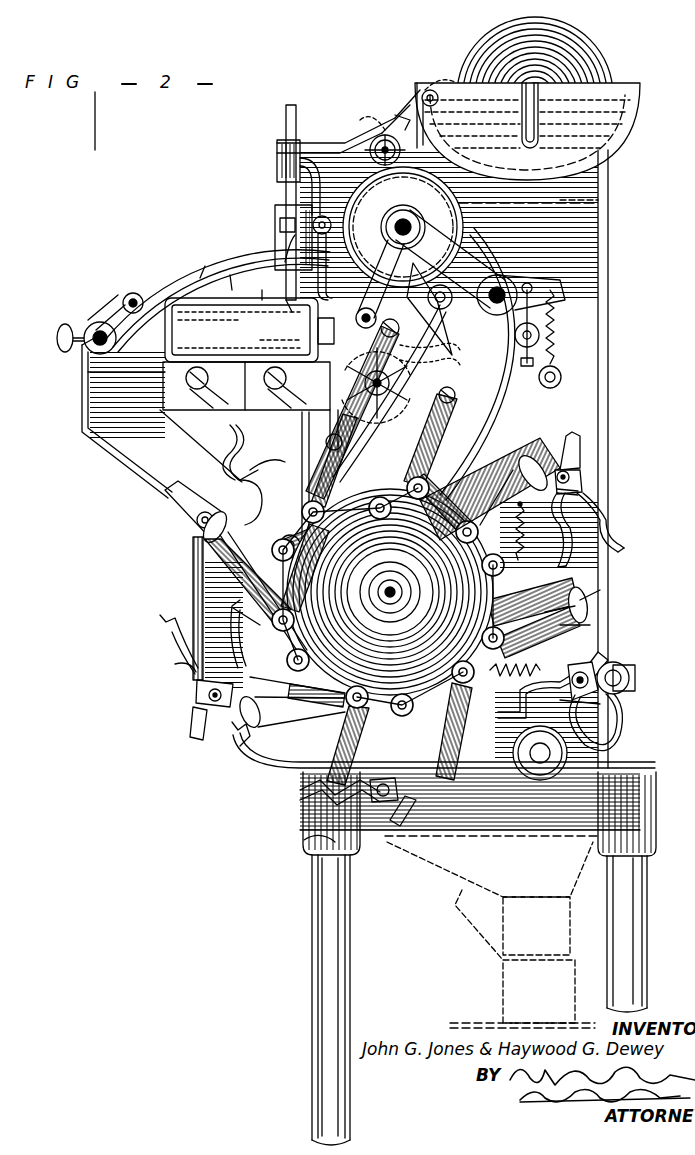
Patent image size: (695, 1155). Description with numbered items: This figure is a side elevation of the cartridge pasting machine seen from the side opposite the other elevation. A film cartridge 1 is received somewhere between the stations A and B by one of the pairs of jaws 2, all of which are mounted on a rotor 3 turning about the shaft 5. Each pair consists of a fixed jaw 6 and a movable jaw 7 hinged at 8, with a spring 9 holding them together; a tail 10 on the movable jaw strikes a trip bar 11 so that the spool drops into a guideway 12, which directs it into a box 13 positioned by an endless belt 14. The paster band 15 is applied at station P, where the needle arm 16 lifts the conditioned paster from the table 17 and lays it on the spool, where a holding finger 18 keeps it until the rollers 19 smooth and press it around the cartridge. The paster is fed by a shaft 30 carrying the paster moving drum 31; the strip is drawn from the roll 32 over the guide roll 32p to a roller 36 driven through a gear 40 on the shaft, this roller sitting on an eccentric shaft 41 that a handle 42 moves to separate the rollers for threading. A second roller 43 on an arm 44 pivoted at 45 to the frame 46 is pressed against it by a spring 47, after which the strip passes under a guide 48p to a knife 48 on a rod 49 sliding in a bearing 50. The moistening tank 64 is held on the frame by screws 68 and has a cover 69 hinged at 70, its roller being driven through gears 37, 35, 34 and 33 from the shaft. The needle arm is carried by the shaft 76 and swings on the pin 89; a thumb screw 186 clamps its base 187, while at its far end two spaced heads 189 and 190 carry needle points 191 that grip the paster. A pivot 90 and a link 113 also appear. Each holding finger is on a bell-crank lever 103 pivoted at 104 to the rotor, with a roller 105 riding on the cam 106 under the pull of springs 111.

The film cartridge 1 is at (568, 745).
The pair of jaws 2 is at (582, 470).
The rotor 3 is at (590, 625).
The shaft 5 is at (575, 606).
The fixed jaw 6 is at (600, 590).
The movable jaw 7 is at (604, 522).
The hinge 8 is at (575, 478).
The spring 9 is at (592, 486).
The tail 10 is at (580, 442).
The trip bar 11 is at (636, 677).
The guideway 12 is at (500, 870).
The box 13 is at (518, 988).
The endless belt 14 is at (490, 1022).
The paster band 15 is at (275, 300).
The needle arm 16 is at (196, 258).
The table 17 is at (296, 258).
The holding finger 18 is at (193, 565).
The rollers 19 is at (438, 310).
The shaft 30 is at (415, 228).
The paster moving drum 31 is at (560, 203).
The roll 32 is at (610, 60).
The guide roll 32p is at (442, 100).
The gear 33 is at (600, 175).
The gear 34 is at (470, 318).
The gear 35 is at (452, 350).
The roller 36 is at (370, 143).
The gear 37 is at (362, 378).
The gear 40 is at (300, 162).
The eccentric shaft 41 is at (380, 128).
The handle 42 is at (405, 115).
The second roller 43 is at (598, 248).
The arm 44 is at (520, 292).
The pivot 45 is at (540, 300).
The frame 46 is at (588, 318).
The spring 47 is at (562, 345).
The knife 48 is at (290, 198).
The guide 48p is at (282, 222).
The rod 49 is at (287, 122).
The bearing 50 is at (277, 145).
The tank 64 is at (240, 342).
The screws 68 is at (185, 388).
The cover 69 is at (200, 278).
The hinge 70 is at (82, 372).
The shaft 76 is at (98, 322).
The pin 89 is at (146, 284).
The roller 90 is at (120, 300).
The bell-crank lever 103 is at (312, 500).
The pivot 104 is at (312, 515).
The roller 105 is at (205, 536).
The cam 106 is at (410, 518).
The springs 111 is at (180, 514).
The link 113 is at (497, 480).
The thumb screw 186 is at (60, 330).
The base 187 is at (72, 343).
The head 189 is at (285, 262).
The head 190 is at (230, 275).
The needle points 191 is at (290, 302).
The station A is at (205, 650).
The station B is at (300, 787).
The station P is at (120, 468).